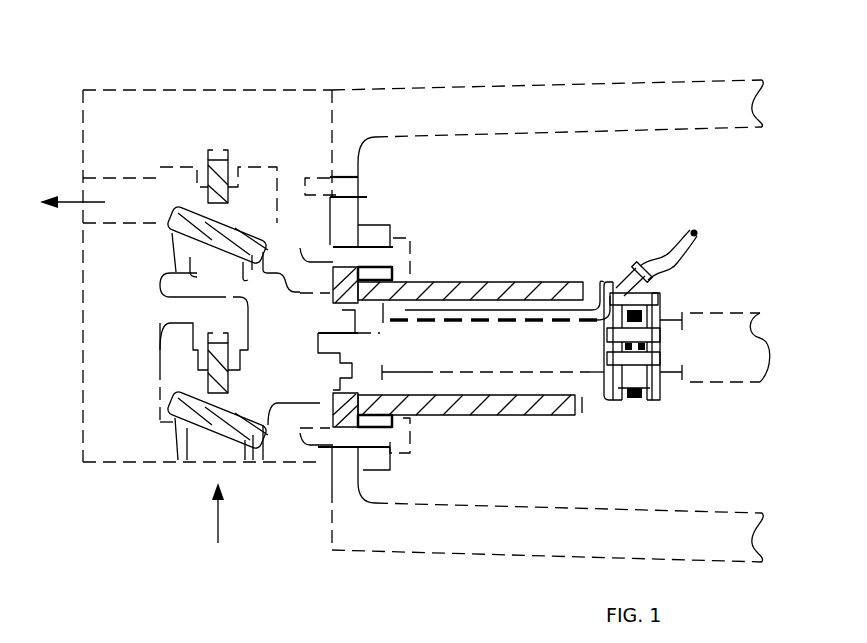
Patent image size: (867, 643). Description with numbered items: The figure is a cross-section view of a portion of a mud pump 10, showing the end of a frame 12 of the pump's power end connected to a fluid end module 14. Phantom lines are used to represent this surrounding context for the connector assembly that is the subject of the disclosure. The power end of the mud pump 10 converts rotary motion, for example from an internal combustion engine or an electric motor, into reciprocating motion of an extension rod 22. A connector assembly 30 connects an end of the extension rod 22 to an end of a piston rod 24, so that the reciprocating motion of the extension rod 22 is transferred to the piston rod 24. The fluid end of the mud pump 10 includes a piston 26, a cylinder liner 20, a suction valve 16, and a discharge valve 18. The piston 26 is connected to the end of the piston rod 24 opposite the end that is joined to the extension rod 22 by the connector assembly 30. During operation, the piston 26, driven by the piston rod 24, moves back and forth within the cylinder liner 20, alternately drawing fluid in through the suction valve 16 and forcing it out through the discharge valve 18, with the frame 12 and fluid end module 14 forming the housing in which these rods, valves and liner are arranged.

The mud pump 10 is at (626, 37).
The frame 12 is at (568, 120).
The fluid end module 14 is at (300, 136).
The suction valve 16 is at (185, 427).
The discharge valve 18 is at (172, 233).
The cylinder liner 20 is at (467, 278).
The extension rod 22 is at (733, 358).
The piston rod 24 is at (578, 351).
The piston 26 is at (347, 383).
The connector assembly 30 is at (626, 220).